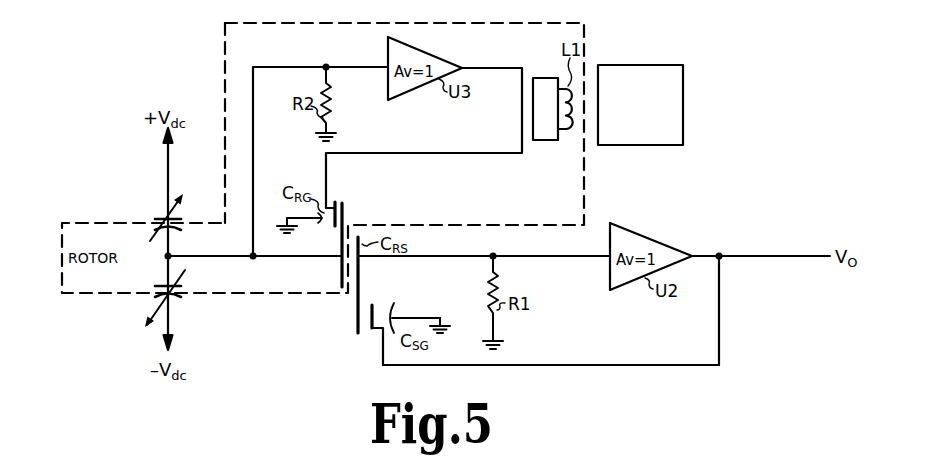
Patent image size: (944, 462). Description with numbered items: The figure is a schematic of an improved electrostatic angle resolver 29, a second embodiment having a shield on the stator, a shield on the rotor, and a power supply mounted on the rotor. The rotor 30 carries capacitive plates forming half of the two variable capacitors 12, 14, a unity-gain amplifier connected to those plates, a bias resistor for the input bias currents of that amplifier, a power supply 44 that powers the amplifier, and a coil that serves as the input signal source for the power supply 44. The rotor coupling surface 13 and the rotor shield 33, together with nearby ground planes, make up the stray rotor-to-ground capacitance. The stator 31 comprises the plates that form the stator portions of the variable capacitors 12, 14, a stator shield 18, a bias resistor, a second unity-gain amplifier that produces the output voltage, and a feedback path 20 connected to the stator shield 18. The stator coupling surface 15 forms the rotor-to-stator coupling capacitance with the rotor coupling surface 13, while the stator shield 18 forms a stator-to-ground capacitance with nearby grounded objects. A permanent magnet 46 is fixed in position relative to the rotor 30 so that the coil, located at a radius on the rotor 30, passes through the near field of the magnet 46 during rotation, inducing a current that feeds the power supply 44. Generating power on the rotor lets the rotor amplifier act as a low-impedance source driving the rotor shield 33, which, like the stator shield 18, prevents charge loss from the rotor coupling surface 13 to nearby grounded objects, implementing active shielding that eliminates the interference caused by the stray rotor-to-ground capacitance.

The variable capacitor 12 is at (164, 216).
The rotor coupling surface 13 is at (345, 207).
The variable capacitor 14 is at (175, 299).
The stator coupling surface 15 is at (361, 268).
The stator shield 18 is at (369, 324).
The feedback path 20 is at (623, 366).
The electrostatic angle resolver 29 is at (588, 21).
The rotor 30 is at (225, 36).
The stator 31 is at (740, 323).
The rotor shield 33 is at (335, 229).
The power supply 44 is at (557, 141).
The permanent magnet 46 is at (683, 105).